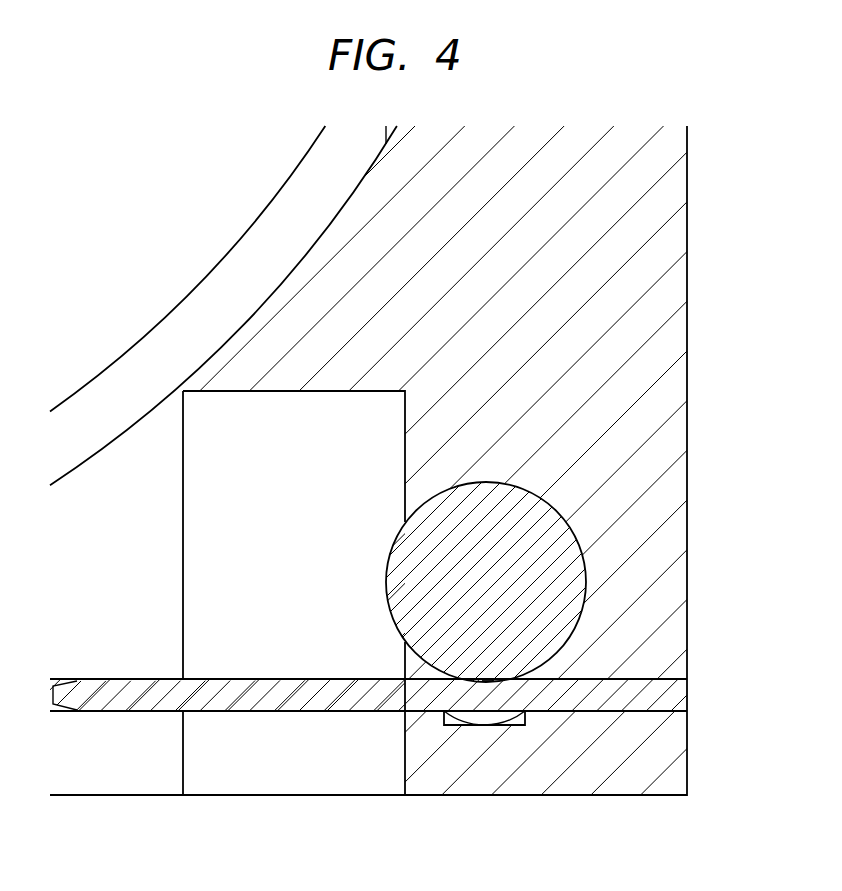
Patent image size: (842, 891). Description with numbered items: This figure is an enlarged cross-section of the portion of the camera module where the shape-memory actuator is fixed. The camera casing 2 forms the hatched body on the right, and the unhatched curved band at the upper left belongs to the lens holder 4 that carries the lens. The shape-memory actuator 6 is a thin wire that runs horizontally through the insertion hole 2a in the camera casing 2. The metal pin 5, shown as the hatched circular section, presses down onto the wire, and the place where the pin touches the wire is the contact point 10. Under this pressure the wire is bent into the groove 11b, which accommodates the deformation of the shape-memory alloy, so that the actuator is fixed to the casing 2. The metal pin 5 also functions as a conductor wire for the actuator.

The lens holder 4 is at (137, 320).
The camera casing 2 is at (675, 330).
The metal pin 5 is at (565, 595).
The shape-memory actuator 6 is at (677, 693).
The insertion hole 2a is at (627, 711).
The contact point 10 is at (488, 680).
The groove 11b is at (515, 727).